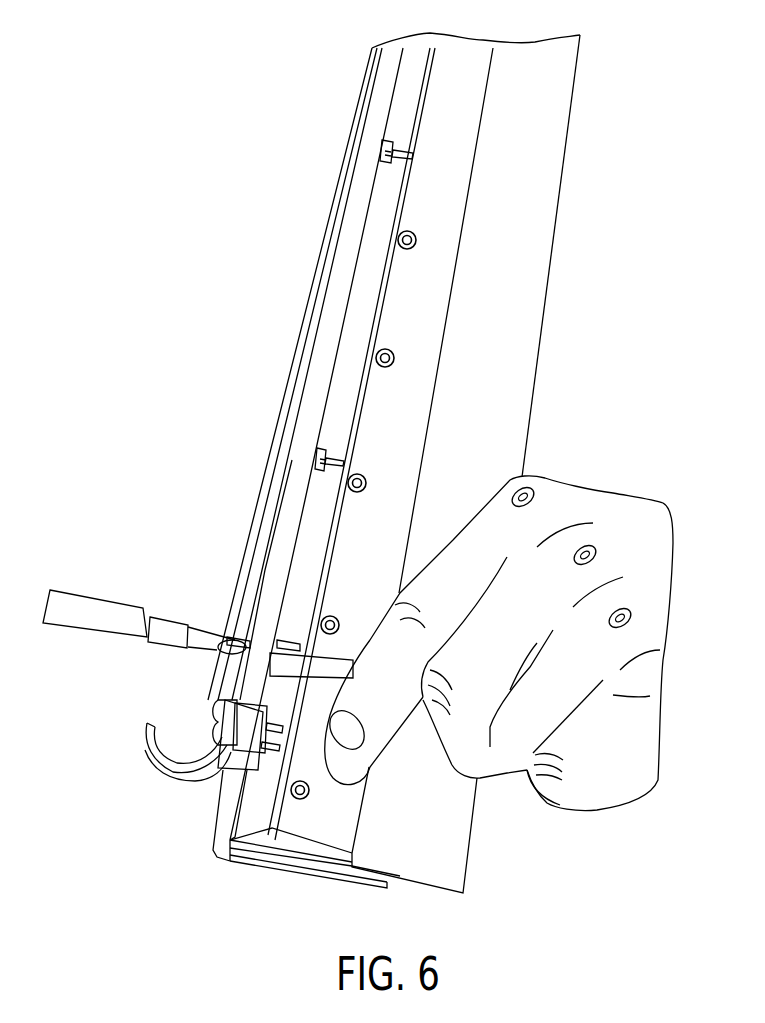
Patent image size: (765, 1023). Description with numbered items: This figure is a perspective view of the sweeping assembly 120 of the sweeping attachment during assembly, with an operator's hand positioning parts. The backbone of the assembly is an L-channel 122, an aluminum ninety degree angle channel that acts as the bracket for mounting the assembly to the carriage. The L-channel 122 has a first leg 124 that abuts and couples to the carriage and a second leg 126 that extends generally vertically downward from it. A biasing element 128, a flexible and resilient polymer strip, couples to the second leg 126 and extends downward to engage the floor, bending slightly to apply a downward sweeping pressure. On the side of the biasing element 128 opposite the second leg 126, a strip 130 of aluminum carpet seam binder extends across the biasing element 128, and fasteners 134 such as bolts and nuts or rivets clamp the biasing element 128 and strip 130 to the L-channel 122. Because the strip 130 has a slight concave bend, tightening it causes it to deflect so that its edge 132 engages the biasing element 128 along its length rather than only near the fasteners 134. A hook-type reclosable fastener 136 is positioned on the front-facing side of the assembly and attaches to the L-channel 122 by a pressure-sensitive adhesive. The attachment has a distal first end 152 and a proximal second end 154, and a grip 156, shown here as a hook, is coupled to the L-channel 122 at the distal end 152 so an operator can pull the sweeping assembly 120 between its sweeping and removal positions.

The sweeping assembly 120 is at (95, 88).
The L-channel 122 is at (217, 853).
The first leg 124 is at (272, 837).
The second leg 126 is at (237, 775).
The biasing element 128 is at (433, 848).
The strip 130 is at (257, 798).
The edge 132 is at (337, 860).
The fasteners 134 is at (320, 453).
The hook-type reclosable fastener 136 is at (310, 823).
The distal first end 152 is at (110, 786).
The proximal second end 154 is at (316, 171).
The grip 156 is at (137, 727).